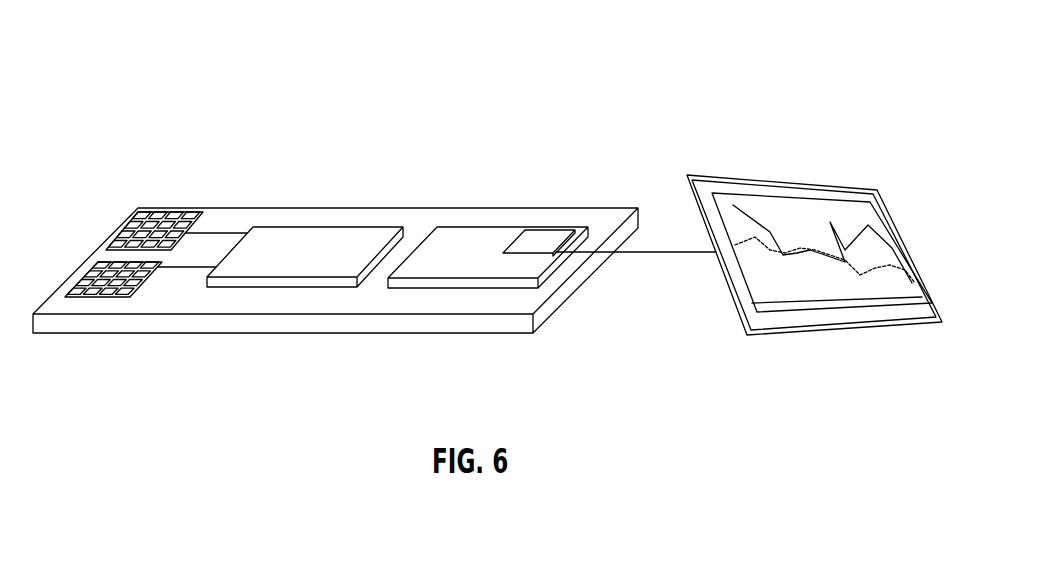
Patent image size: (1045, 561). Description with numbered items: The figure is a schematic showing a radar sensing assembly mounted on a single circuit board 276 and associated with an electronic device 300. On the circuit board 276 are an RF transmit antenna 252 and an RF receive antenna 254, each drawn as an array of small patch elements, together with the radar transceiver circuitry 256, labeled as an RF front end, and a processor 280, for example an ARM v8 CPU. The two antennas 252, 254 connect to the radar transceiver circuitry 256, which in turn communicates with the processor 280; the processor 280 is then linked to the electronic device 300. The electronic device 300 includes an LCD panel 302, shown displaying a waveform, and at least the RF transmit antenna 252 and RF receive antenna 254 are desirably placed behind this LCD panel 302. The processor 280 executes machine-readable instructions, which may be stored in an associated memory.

The RF transmit antenna 252 is at (100, 293).
The RF receive antenna 254 is at (158, 212).
The radar transceiver circuitry 256 is at (388, 237).
The circuit board 276 is at (363, 325).
The processor 280 is at (495, 232).
The electronic device 300 is at (808, 108).
The LCD panel 302 is at (845, 232).